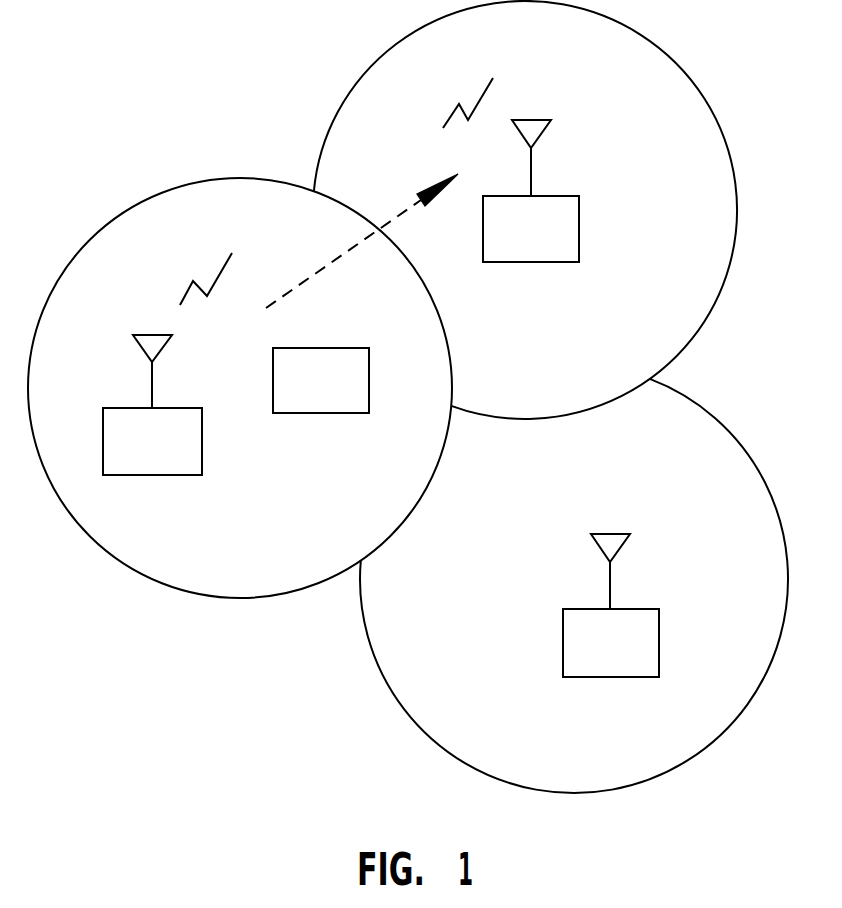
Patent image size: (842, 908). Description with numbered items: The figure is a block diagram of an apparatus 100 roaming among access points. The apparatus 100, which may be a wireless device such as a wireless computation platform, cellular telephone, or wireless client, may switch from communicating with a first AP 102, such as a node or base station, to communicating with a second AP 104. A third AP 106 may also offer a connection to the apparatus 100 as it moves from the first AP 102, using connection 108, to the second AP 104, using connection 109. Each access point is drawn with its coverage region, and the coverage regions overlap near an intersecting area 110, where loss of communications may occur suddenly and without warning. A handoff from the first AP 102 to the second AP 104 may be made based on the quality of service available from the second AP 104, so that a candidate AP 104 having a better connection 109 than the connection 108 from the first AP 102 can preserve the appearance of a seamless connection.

The apparatus 100 is at (369, 381).
The first AP 102 is at (202, 441).
The second AP 104 is at (579, 228).
The third AP 106 is at (659, 641).
The connection 108 is at (188, 287).
The connection 109 is at (451, 111).
The intersecting area 110 is at (453, 407).